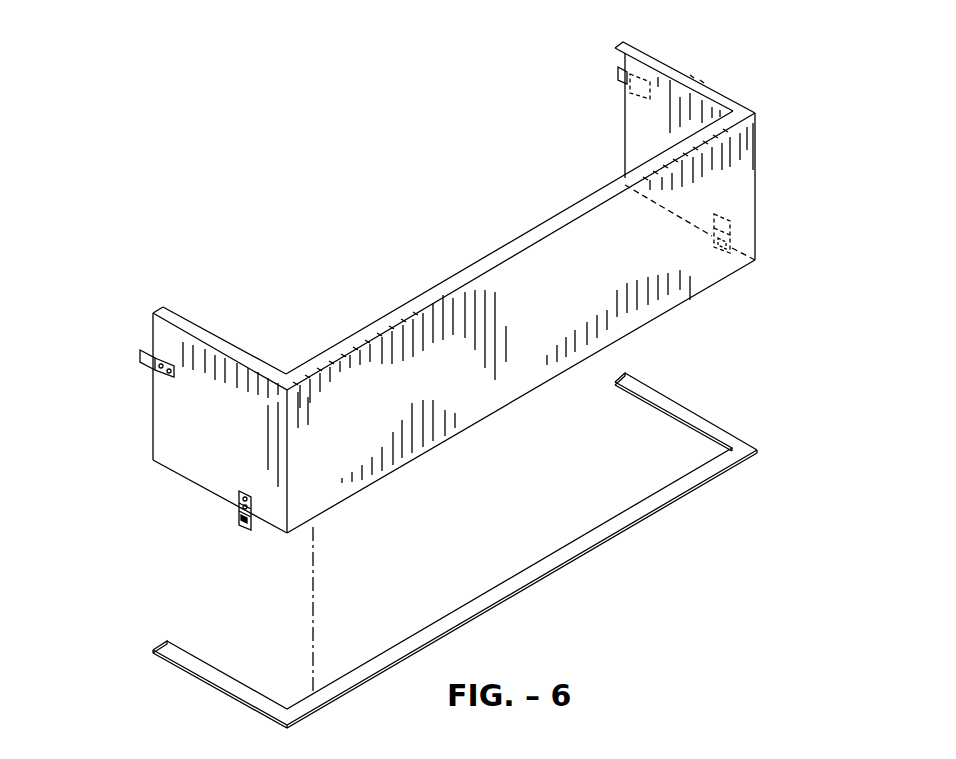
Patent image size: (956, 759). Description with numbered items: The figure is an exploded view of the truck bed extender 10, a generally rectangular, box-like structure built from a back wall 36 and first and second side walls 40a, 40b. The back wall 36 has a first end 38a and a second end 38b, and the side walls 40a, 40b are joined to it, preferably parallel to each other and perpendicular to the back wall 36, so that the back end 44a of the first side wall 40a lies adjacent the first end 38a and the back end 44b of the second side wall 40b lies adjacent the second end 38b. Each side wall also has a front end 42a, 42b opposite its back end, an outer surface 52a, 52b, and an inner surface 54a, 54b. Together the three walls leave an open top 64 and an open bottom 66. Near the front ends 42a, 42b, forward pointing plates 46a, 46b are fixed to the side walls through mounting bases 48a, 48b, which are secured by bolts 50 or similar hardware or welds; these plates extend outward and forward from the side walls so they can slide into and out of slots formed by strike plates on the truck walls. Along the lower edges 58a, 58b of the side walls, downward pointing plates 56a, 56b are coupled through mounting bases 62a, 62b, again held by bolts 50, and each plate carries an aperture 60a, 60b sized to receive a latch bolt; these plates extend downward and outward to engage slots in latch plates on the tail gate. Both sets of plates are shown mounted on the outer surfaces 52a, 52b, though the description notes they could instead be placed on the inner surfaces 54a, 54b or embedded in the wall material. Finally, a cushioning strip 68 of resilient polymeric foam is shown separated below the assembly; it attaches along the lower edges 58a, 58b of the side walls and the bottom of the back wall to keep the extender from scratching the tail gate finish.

The truck bed extender 10 is at (160, 74).
The open top 64 is at (424, 192).
The back wall 36 is at (609, 319).
The open bottom 66 is at (472, 369).
The cushioning strip 68 is at (651, 506).
The front end of first side wall 42a is at (141, 411).
The front end of second side wall 42b is at (611, 109).
The back end of first side wall 44a is at (291, 486).
The back end of second side wall 44b is at (770, 137).
The first end of back wall 38a is at (305, 444).
The second end of back wall 38b is at (756, 177).
The first side wall 40a is at (246, 359).
The second side wall 40b is at (702, 82).
The mounting base 48a is at (165, 308).
The mounting base 48b is at (660, 53).
The forward pointing plate 46a is at (148, 351).
The forward pointing plate 46b is at (617, 69).
The bolts 50 is at (162, 373).
The outer surface of first side wall 52a is at (212, 424).
The outer surface of second side wall 52b is at (746, 97).
The inner surface of first side wall 54a is at (281, 357).
The inner surface of second side wall 54b is at (654, 138).
The downward pointing plate 56a is at (250, 529).
The downward pointing plate 56b is at (745, 262).
The lower edge of first side wall 58a is at (198, 494).
The lower edge of second side wall 58b is at (675, 220).
The aperture 60a is at (243, 528).
The aperture 60b is at (742, 240).
The mounting base 62a is at (240, 492).
The mounting base 62b is at (732, 216).